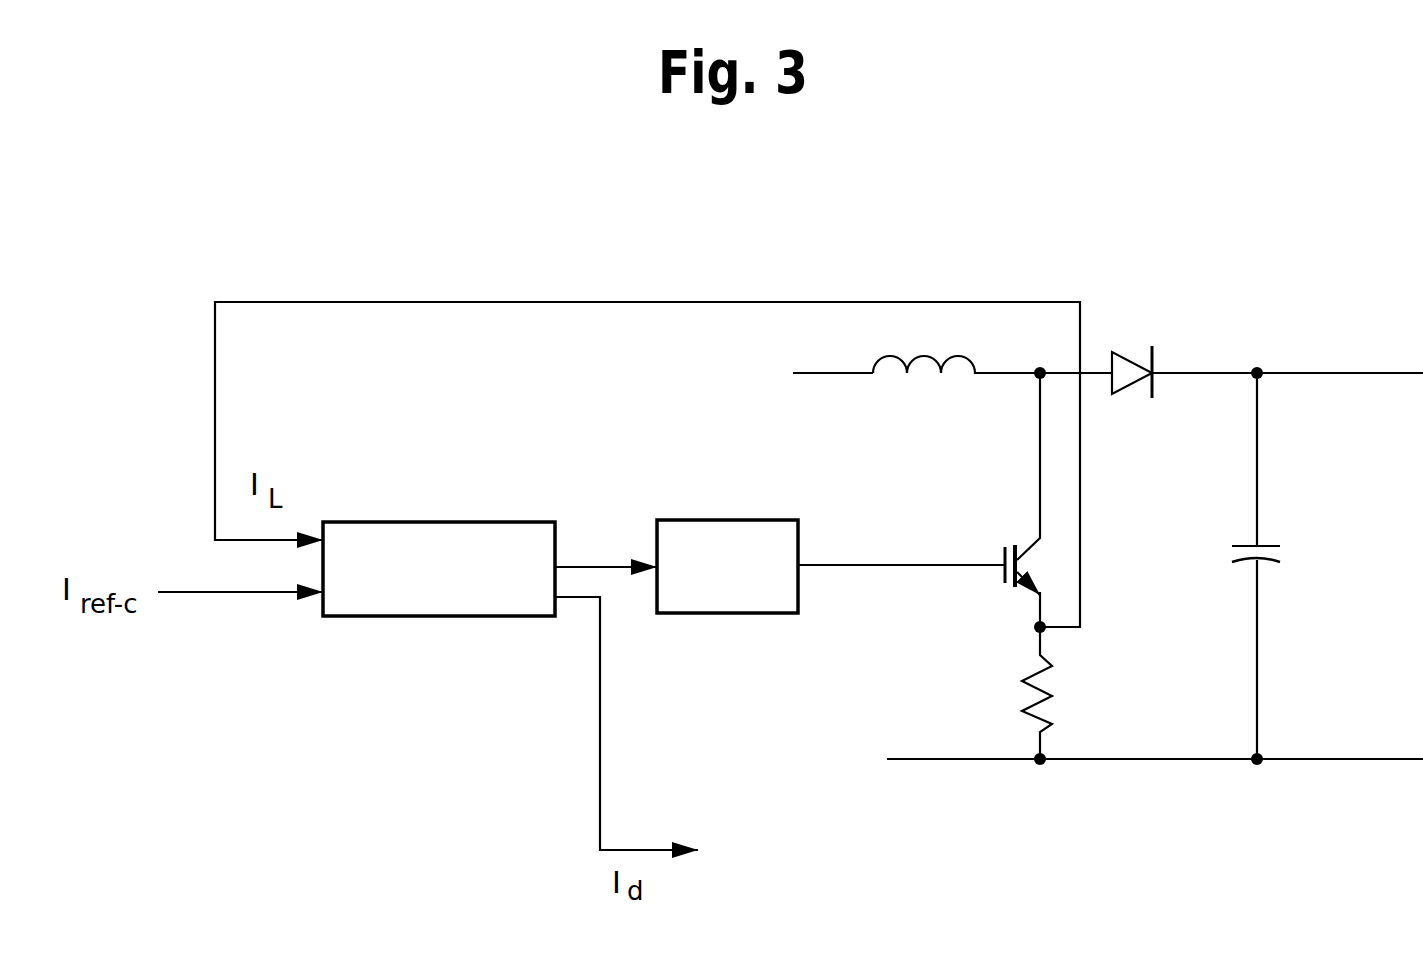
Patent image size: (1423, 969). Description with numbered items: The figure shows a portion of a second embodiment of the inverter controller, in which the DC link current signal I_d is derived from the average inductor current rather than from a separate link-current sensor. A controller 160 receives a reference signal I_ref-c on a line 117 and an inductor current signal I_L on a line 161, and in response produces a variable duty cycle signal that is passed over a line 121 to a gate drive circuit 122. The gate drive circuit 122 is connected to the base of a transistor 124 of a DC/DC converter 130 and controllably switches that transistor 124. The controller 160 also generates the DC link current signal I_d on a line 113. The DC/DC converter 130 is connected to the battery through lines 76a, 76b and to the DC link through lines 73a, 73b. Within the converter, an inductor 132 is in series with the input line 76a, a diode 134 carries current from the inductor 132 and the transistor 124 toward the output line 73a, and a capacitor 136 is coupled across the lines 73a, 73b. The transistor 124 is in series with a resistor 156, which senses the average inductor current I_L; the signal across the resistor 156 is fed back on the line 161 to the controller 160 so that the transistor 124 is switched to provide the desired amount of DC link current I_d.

The line 161 is at (645, 302).
The diode 134 is at (1133, 362).
The line 73a is at (1310, 372).
The line 76a is at (818, 373).
The inductor 132 is at (945, 385).
The transistor 124 is at (1003, 555).
The line 121 is at (580, 567).
The line 117 is at (207, 592).
The controller 160 is at (385, 616).
The gate drive circuit 122 is at (665, 613).
The line 113 is at (600, 768).
The line 76b is at (920, 759).
The resistor 156 is at (1045, 702).
The capacitor 136 is at (1262, 565).
The line 73b is at (1335, 759).
The DC/DC converter 130 is at (1175, 778).